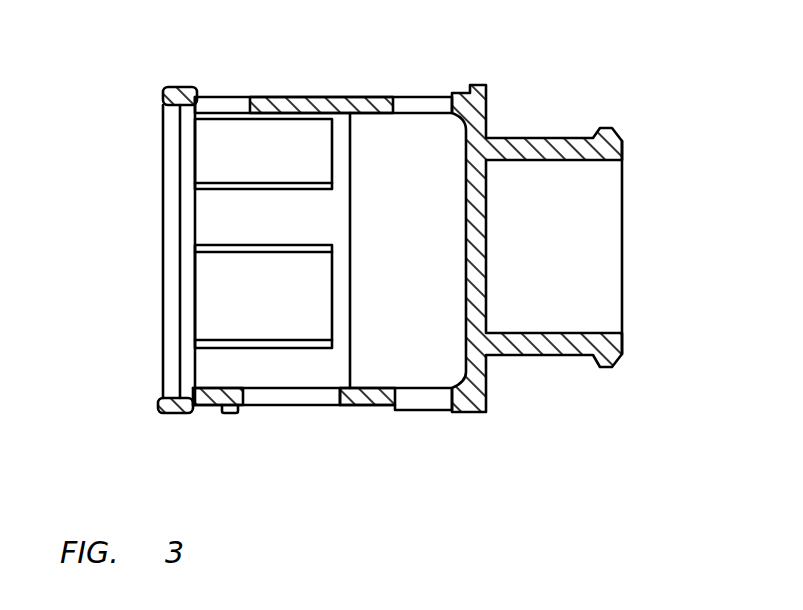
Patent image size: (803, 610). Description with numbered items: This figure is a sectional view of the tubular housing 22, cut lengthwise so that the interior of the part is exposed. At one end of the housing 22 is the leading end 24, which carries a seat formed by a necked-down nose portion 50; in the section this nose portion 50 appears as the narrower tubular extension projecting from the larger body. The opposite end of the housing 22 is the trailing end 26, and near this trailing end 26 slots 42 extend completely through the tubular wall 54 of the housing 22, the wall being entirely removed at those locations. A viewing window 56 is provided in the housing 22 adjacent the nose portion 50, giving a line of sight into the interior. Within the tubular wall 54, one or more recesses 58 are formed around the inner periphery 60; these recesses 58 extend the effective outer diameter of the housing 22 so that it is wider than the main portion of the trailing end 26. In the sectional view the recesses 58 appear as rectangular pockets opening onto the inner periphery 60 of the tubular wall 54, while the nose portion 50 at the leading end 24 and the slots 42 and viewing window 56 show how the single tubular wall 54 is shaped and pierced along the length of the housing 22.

The tubular housing 22 is at (597, 426).
The leading end 24 is at (626, 237).
The trailing end 26 is at (162, 236).
The slots 42 is at (268, 397).
The necked-down nose portion 50 is at (530, 140).
The tubular wall 54 is at (351, 110).
The viewing window 56 is at (420, 395).
The recesses 58 is at (203, 153).
The inner periphery 60 is at (283, 228).